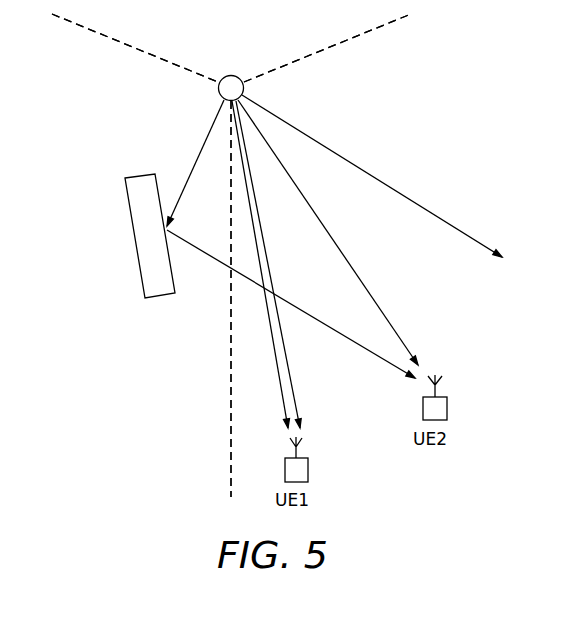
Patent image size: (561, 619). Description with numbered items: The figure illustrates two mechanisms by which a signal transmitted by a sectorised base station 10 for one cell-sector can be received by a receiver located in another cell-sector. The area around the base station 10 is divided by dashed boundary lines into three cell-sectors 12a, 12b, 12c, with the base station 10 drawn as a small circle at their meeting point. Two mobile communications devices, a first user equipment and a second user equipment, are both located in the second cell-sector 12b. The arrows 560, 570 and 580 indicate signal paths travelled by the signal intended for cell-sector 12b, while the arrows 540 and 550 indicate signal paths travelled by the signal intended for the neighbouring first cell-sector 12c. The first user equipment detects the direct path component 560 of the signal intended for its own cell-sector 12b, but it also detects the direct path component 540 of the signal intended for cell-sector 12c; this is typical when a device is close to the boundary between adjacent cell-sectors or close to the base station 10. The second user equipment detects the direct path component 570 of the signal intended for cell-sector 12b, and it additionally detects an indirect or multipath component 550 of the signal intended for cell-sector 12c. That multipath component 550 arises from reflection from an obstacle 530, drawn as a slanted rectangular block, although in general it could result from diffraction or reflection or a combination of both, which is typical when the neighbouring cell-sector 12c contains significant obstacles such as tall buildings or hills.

The base station 10 is at (232, 75).
The cell-sector 12a is at (205, 31).
The second cell-sector 12b is at (377, 88).
The first cell-sector 12c is at (121, 88).
The obstacle 530 is at (143, 278).
The direct path component 540 is at (277, 363).
The multipath path component 550 is at (284, 300).
The direct path component 560 is at (292, 378).
The direct path component 570 is at (350, 268).
The signal path 580 is at (402, 195).